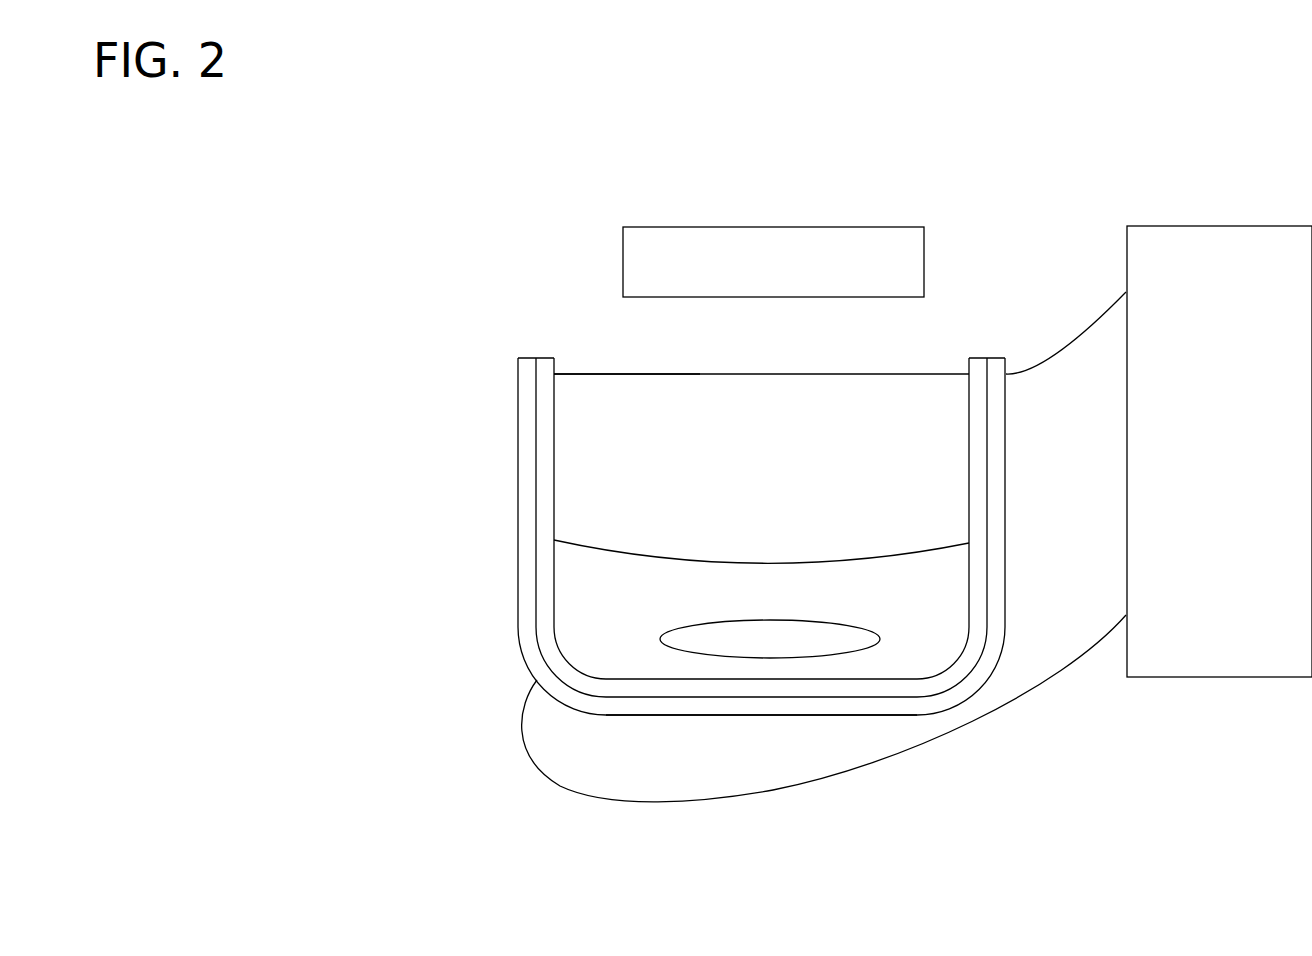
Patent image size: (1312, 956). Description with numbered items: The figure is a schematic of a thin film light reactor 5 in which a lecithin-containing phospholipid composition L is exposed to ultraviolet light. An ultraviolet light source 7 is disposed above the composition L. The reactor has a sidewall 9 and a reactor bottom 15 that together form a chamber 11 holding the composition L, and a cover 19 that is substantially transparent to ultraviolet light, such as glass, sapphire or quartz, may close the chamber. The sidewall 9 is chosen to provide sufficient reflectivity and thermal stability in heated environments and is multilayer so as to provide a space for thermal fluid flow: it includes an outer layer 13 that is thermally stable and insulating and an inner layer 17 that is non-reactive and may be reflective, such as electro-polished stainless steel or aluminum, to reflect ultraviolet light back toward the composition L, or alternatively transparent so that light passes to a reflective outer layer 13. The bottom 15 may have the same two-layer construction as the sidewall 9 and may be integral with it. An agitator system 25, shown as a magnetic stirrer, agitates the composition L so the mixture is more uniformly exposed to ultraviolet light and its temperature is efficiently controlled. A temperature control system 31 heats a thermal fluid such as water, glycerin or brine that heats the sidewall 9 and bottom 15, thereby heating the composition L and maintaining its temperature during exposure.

The thin film light reactor 5 is at (1012, 223).
The ultraviolet light source 7 is at (760, 277).
The sidewall 9 is at (804, 560).
The chamber 11 is at (916, 397).
The outer layer 13 is at (996, 520).
The reactor bottom 15 is at (698, 717).
The inner layer 17 is at (977, 479).
The cover 19 is at (600, 373).
The agitator system 25 is at (782, 657).
The temperature control system 31 is at (1205, 470).
The lecithin-containing phospholipid composition L is at (933, 622).